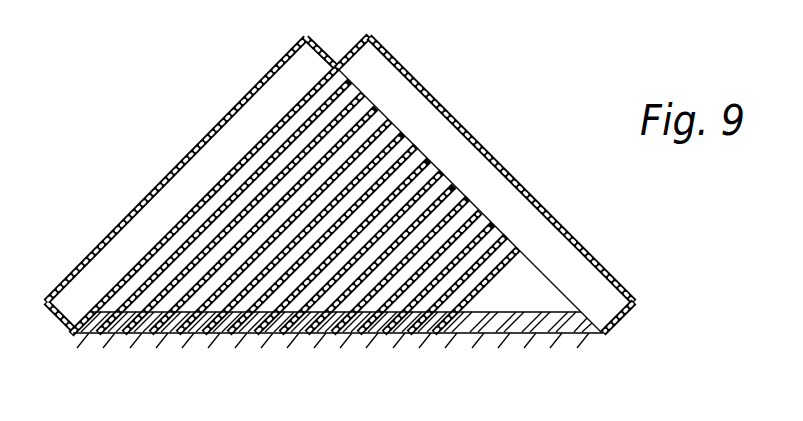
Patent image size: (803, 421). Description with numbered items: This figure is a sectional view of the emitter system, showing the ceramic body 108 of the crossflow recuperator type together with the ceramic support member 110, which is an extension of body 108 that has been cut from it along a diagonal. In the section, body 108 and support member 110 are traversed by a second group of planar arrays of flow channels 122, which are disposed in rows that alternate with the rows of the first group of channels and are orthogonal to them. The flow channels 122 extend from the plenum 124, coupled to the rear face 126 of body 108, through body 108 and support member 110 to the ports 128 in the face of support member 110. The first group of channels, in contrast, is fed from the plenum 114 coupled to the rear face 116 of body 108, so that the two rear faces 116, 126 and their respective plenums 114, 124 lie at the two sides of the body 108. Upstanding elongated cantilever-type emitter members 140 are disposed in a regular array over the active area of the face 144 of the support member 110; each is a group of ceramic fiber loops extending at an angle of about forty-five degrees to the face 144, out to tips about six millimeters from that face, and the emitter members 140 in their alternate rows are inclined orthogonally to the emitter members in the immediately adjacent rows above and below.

The ceramic body 108 is at (513, 237).
The ceramic support member 110 is at (485, 334).
The plenum 114 is at (130, 247).
The rear face 116 is at (205, 200).
The flow channels 122 is at (294, 153).
The plenum 124 is at (435, 130).
The rear face 126 is at (453, 176).
The ports 128 is at (122, 336).
The emitter members 140 is at (263, 347).
The face 144 is at (590, 336).